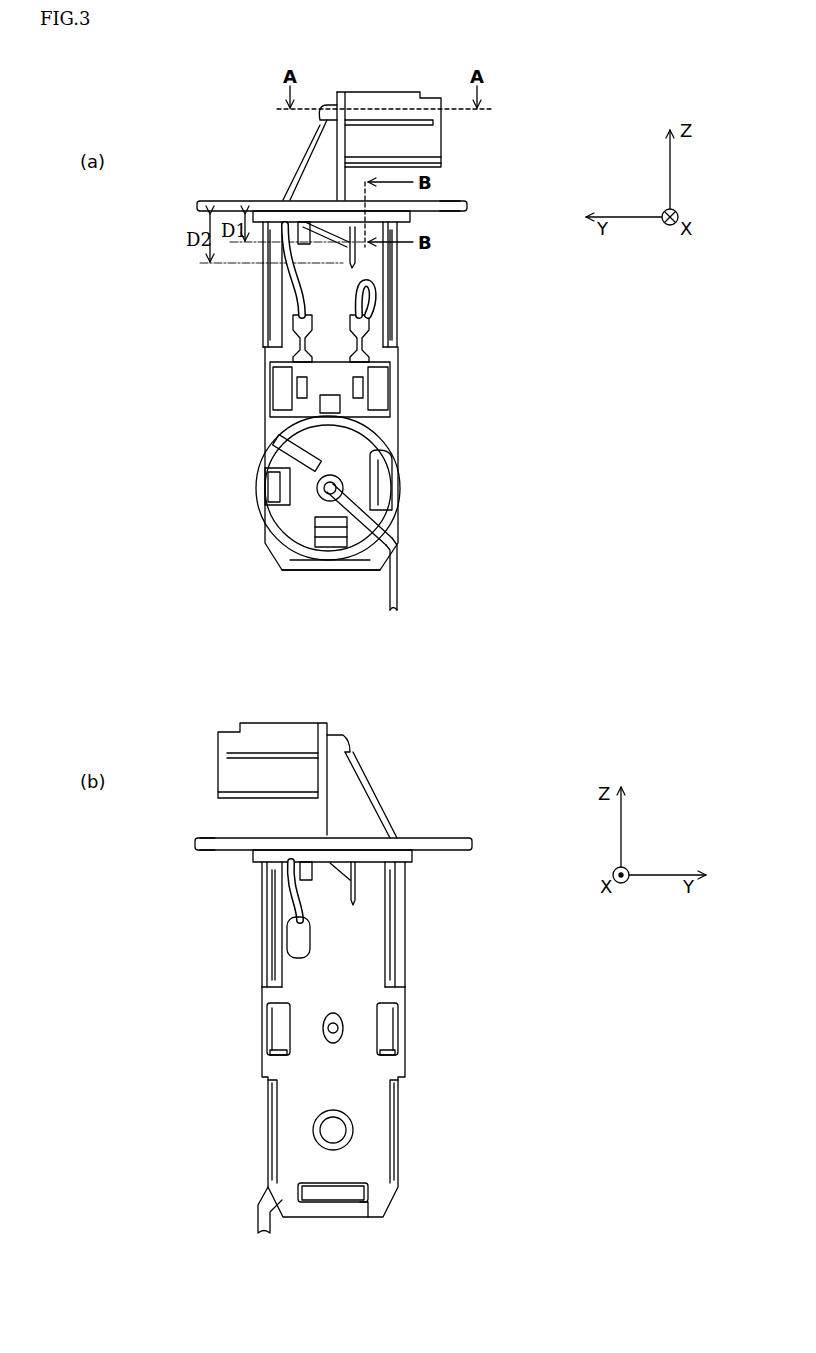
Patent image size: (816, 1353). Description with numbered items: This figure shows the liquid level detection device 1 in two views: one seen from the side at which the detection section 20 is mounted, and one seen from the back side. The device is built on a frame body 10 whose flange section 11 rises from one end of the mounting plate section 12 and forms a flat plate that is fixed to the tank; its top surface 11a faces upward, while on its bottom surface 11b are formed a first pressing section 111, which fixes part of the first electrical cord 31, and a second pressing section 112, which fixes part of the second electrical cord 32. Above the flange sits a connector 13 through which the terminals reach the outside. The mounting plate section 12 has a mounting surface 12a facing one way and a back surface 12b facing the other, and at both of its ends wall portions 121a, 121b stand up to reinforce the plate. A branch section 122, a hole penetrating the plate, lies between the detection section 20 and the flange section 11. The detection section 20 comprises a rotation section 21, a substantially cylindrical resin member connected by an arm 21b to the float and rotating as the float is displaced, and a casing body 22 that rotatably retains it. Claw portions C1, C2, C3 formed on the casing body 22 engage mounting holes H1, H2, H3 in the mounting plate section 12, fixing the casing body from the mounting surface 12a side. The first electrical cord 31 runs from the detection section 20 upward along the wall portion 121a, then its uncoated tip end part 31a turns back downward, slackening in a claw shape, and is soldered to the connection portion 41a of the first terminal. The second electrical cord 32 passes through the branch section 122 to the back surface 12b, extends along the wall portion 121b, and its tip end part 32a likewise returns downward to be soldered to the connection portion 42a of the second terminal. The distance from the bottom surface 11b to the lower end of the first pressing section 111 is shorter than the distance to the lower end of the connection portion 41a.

The liquid level detection device 1 is at (572, 418).
The frame body 10 is at (405, 422).
The flange section 11 is at (468, 206).
The top surface 11a is at (445, 200).
The bottom surface 11b is at (455, 212).
The first pressing section 111 is at (300, 232).
The second pressing section 112 is at (307, 864).
The mounting plate section 12 is at (318, 572).
The mounting surface 12a is at (300, 320).
The back surface 12b is at (372, 1100).
The wall portion 121a is at (276, 328).
The wall portion 121b is at (388, 342).
The branch section 122 is at (373, 305).
The connector 13 is at (380, 92).
The detection section 20 is at (250, 483).
The rotation section 21 is at (362, 475).
The arm 21b is at (398, 563).
The casing body 22 is at (300, 405).
The first electrical cord 31 is at (290, 278).
The tip end part 31a is at (367, 260).
The second electrical cord 32 is at (360, 308).
The tip end part 32a is at (360, 888).
The connection portion 41a is at (343, 240).
The connection portion 42a is at (363, 873).
The claw portion C1 is at (390, 1027).
The claw portion C2 is at (275, 1027).
The claw portion C3 is at (343, 1200).
The mounting hole H1 is at (393, 1050).
The mounting hole H2 is at (272, 1050).
The mounting hole H3 is at (363, 1200).